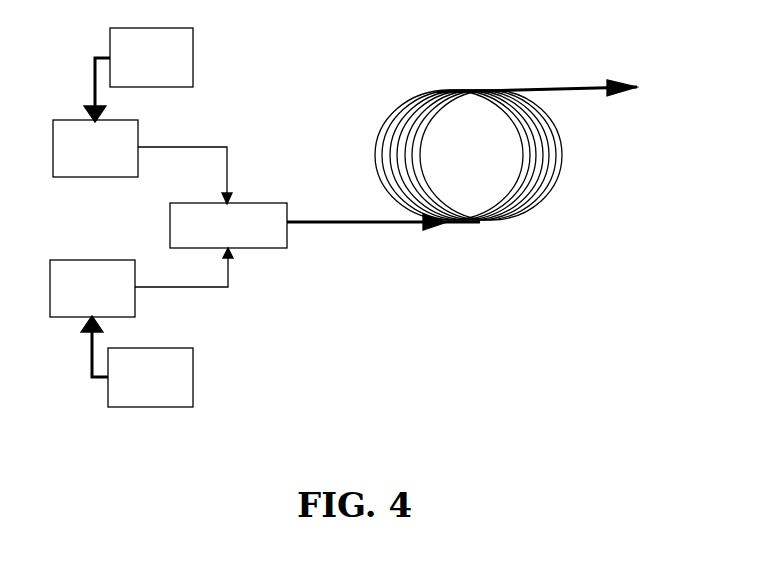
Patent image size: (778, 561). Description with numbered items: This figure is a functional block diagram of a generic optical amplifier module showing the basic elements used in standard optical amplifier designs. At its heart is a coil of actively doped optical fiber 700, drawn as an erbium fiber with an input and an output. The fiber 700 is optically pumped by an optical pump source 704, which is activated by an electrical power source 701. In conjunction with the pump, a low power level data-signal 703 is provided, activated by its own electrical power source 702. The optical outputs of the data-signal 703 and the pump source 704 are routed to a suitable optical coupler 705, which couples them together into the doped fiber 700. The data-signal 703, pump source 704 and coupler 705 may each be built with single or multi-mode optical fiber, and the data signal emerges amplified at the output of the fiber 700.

The actively doped optical fiber 700 is at (557, 180).
The electrical power source 701 is at (193, 38).
The electrical power source 702 is at (193, 382).
The low power level data-signal 703 is at (75, 260).
The optical pump source 704 is at (122, 177).
The optical coupler 705 is at (240, 203).